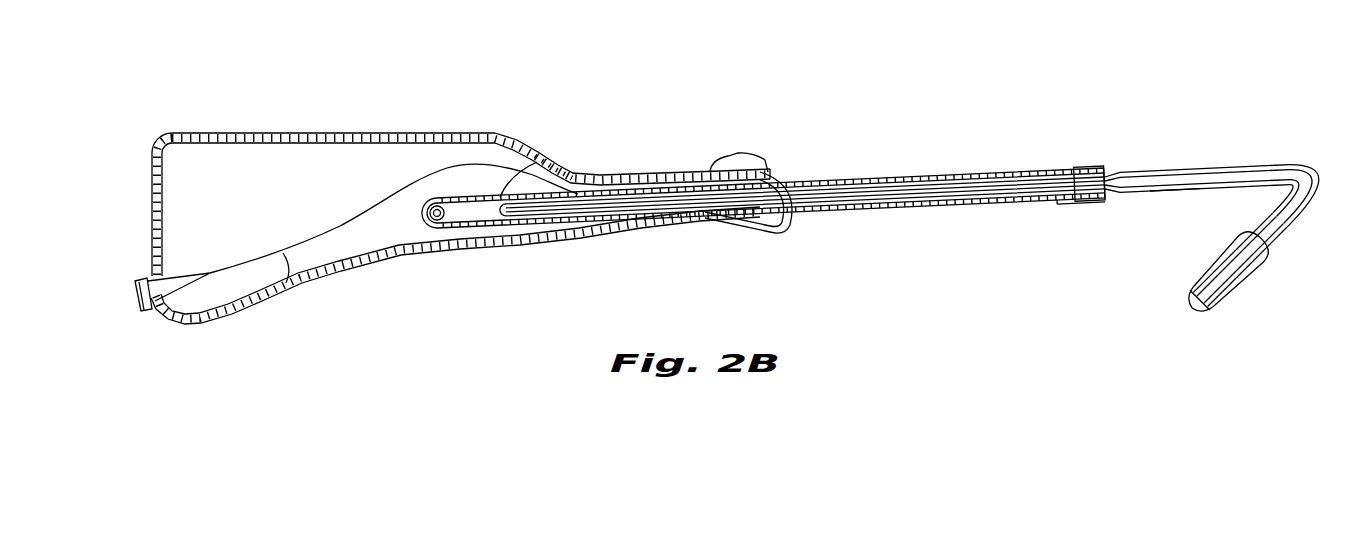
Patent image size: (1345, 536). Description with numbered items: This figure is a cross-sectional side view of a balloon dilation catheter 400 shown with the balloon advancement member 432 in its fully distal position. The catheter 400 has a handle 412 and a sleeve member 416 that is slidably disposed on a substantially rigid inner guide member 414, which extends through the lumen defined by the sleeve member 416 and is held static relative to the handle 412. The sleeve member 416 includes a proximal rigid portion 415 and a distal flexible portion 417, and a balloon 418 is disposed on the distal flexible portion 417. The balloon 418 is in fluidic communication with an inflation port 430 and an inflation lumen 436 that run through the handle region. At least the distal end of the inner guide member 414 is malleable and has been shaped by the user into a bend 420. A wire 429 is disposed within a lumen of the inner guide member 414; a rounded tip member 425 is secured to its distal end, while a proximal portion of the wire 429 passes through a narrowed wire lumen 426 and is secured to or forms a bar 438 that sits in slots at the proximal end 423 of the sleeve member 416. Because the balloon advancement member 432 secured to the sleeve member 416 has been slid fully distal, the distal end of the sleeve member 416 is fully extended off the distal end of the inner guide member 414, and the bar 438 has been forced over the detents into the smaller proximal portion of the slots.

The balloon dilation catheter 400 is at (756, 81).
The handle 412 is at (314, 132).
The substantially rigid inner guide member 414 is at (1133, 174).
The proximal rigid portion 415 is at (878, 177).
The sleeve member 416 is at (1083, 139).
The distal flexible portion 417 is at (1166, 197).
The balloon 418 is at (1243, 286).
The bend 420 is at (1306, 167).
The proximal end 423 is at (533, 170).
The rounded tip member 425 is at (1193, 338).
The narrowed wire lumen 426 is at (791, 231).
The wire 429 is at (1077, 203).
The inflation port 430 is at (153, 312).
The balloon advancement member 432 is at (736, 154).
The inflation lumen 436 is at (288, 284).
The bar 438 is at (439, 249).